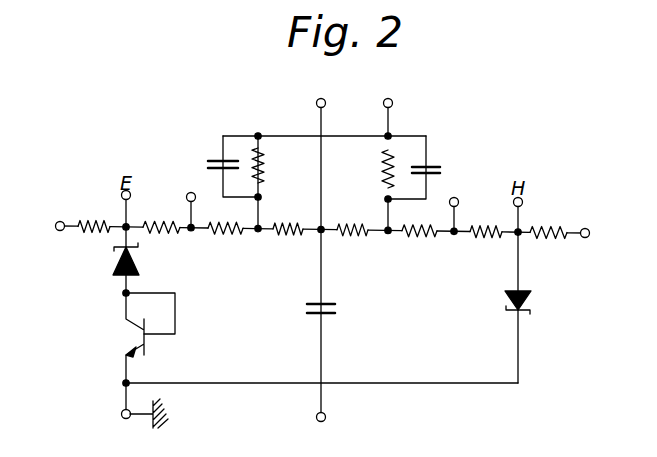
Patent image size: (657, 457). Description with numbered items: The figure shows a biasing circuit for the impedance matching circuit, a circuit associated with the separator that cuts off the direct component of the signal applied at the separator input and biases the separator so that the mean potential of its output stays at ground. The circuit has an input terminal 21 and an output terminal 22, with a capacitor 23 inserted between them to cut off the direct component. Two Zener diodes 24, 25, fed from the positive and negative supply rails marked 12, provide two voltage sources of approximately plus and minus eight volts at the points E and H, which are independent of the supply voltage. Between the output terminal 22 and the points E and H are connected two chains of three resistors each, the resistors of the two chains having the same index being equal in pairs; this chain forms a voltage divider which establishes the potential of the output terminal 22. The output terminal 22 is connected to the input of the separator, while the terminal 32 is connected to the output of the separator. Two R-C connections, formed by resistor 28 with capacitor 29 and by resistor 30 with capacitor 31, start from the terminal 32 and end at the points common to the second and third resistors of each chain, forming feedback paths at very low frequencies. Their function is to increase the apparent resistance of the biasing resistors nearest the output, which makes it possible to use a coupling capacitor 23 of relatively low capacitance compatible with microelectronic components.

The supply voltage terminals 12 is at (327, 229).
The input terminal 21 is at (326, 418).
The output terminal 22 is at (334, 98).
The capacitor 23 is at (332, 313).
The Zener diode 24 is at (116, 262).
The Zener diode 25 is at (528, 301).
The resistor 28 is at (262, 178).
The capacitor 29 is at (210, 160).
The resistor 30 is at (383, 178).
The capacitor 31 is at (435, 171).
The terminal 32 is at (401, 98).